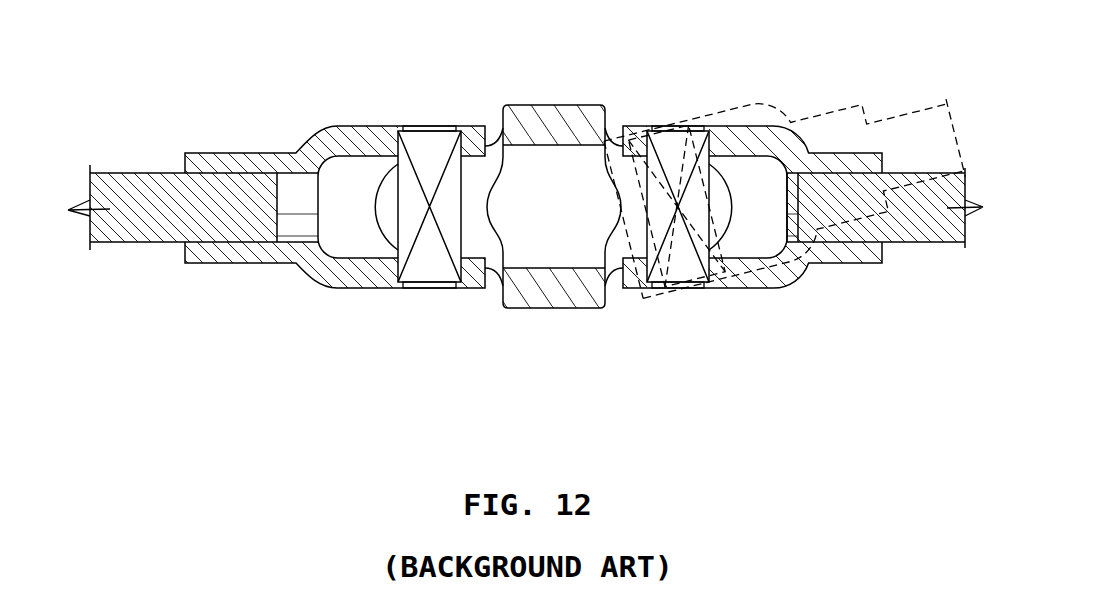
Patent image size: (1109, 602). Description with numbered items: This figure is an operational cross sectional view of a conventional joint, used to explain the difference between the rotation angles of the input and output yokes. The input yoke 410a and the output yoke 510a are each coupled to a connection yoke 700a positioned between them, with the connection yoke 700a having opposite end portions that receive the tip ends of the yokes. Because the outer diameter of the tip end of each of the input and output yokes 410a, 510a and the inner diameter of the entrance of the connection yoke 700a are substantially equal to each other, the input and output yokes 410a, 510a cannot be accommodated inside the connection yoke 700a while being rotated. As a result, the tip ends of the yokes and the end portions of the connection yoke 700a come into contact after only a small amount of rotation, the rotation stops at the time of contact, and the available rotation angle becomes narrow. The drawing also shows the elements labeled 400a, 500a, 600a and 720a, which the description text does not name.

The first shaft 400a is at (143, 249).
The input yoke 410a is at (244, 268).
The second shaft 500a is at (917, 249).
The output yoke 510a is at (802, 285).
The bearing 600a is at (422, 263).
The connection yoke 700a is at (557, 312).
The ball 720a is at (383, 208).